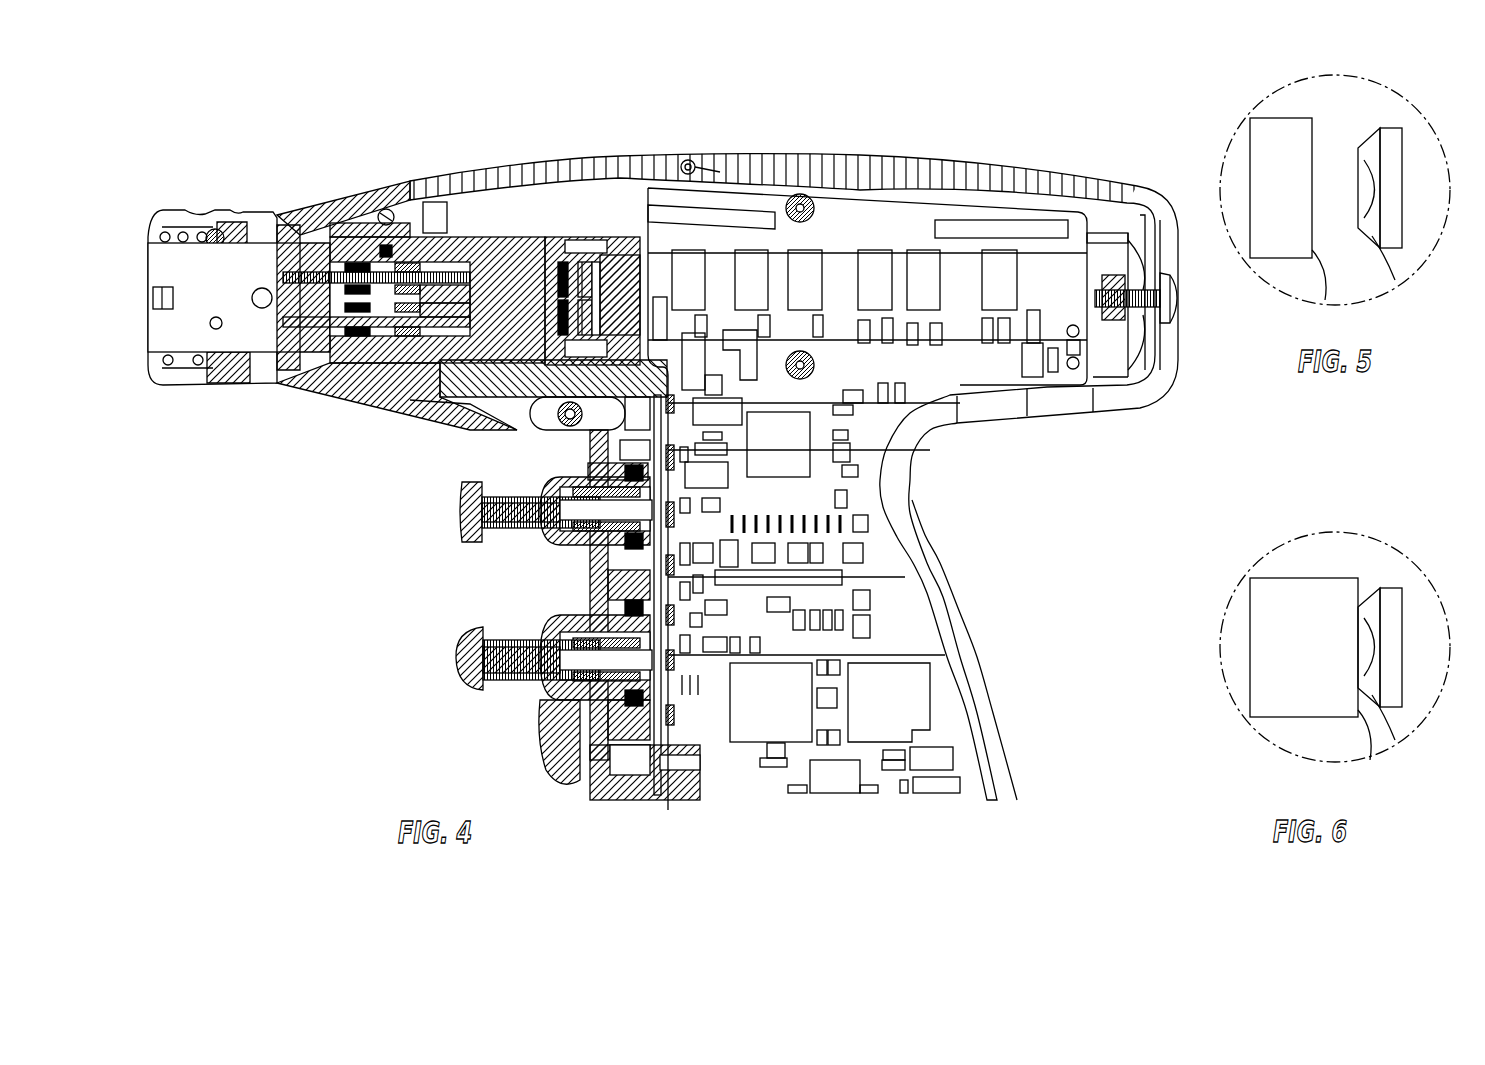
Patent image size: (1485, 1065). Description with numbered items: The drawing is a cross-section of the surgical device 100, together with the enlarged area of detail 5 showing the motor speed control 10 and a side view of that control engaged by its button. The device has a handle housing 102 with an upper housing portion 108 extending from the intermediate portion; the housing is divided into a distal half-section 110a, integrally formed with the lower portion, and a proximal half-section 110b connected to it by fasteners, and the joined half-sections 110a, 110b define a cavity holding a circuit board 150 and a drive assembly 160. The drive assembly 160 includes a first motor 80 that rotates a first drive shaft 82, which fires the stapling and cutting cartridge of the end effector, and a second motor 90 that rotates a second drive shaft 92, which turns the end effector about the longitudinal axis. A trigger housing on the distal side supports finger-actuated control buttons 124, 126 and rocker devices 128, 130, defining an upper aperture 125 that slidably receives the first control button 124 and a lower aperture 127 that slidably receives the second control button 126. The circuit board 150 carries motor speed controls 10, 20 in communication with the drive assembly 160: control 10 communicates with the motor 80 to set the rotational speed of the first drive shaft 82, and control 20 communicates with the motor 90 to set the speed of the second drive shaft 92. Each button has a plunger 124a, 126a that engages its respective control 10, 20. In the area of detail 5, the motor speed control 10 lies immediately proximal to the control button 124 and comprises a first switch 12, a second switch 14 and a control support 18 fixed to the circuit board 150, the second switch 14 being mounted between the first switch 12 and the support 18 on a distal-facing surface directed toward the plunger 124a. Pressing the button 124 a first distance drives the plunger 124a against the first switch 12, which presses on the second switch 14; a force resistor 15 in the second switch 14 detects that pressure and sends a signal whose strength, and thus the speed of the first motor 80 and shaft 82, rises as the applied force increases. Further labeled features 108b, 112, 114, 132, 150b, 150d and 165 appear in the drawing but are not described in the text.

In FIG. 4, the surgical device 100 is at (940, 133).
In FIG. 4, the handle housing 102 is at (1020, 183).
In FIG. 4, the upper housing portion 108 is at (183, 210).
In FIG. 4, the chuck face 108b is at (152, 335).
In FIG. 4, the distal half-section 110a is at (442, 178).
In FIG. 4, the proximal half-section 110b is at (1110, 190).
In FIG. 4, the fastener 112 is at (686, 160).
In FIG. 4, the gear case 114 is at (313, 215).
In FIG. 4, the screw 165 is at (382, 208).
In FIG. 4, the drive assembly 160 is at (487, 230).
In FIG. 4, the second drive shaft 92 is at (283, 277).
In FIG. 4, the first drive shaft 82 is at (283, 322).
In FIG. 4, the second motor 90 is at (550, 240).
In FIG. 4, the first motor 80 is at (620, 262).
In FIG. 4, the circuit board 150 is at (838, 205).
In FIG. 4, the PCB portion 150b is at (640, 452).
In FIG. 4, the PCB portion 150d is at (600, 700).
In FIG. 4, the trigger switch 132 is at (600, 423).
In FIG. 4, the first control button 124 is at (463, 490).
In FIG. 5, the first control button 124 is at (1298, 118).
In FIG. 6, the first control button 124 is at (1298, 578).
In FIG. 5, the plunger 124a is at (1312, 295).
In FIG. 6, the plunger 124a is at (1360, 755).
In FIG. 4, the upper aperture 125 is at (585, 535).
In FIG. 4, the second control button 126 is at (455, 662).
In FIG. 4, the plunger 126a is at (620, 682).
In FIG. 4, the lower aperture 127 is at (590, 605).
In FIG. 4, the rocker device 128 is at (545, 540).
In FIG. 4, the rocker device 130 is at (548, 752).
In FIG. 4, the motor speed control 10 is at (622, 528).
In FIG. 5, the motor speed control 10 is at (1338, 102).
In FIG. 5, the first switch 12 is at (1360, 150).
In FIG. 6, the first switch 12 is at (1360, 607).
In FIG. 5, the second switch 14 is at (1362, 148).
In FIG. 6, the second switch 14 is at (1362, 607).
In FIG. 5, the force resistor 15 is at (1395, 282).
In FIG. 6, the force resistor 15 is at (1395, 740).
In FIG. 5, the control support 18 is at (1395, 138).
In FIG. 6, the control support 18 is at (1395, 598).
In FIG. 4, the motor speed control 20 is at (620, 640).
In FIG. 4, the section view indicator 5 is at (668, 493).